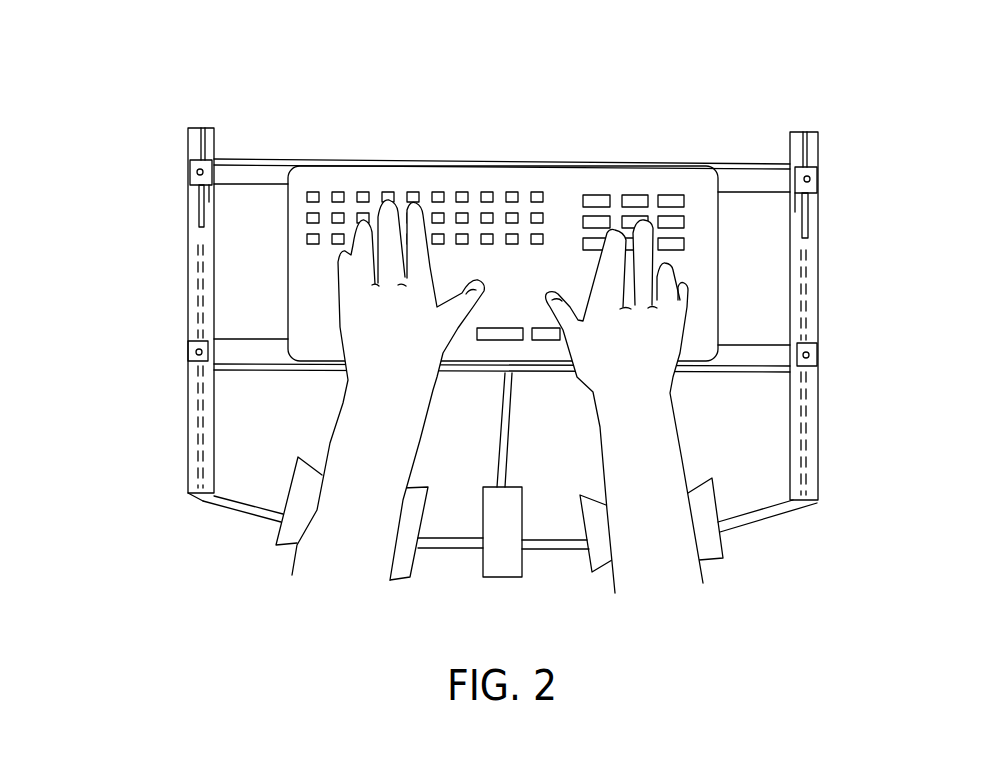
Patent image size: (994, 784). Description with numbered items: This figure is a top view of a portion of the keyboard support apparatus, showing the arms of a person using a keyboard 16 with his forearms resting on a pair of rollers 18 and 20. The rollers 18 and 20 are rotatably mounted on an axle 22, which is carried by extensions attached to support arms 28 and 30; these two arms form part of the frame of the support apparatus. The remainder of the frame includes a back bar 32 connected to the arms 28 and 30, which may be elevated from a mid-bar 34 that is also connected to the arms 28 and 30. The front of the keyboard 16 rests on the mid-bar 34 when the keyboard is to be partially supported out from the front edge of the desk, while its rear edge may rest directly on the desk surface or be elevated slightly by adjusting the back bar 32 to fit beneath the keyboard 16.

The keyboard 16 is at (668, 185).
The roller 18 is at (277, 537).
The roller 20 is at (723, 540).
The axle 22 is at (245, 510).
The support arm 28 is at (187, 395).
The support arm 30 is at (820, 413).
The back bar 32 is at (253, 157).
The mid-bar 34 is at (253, 338).